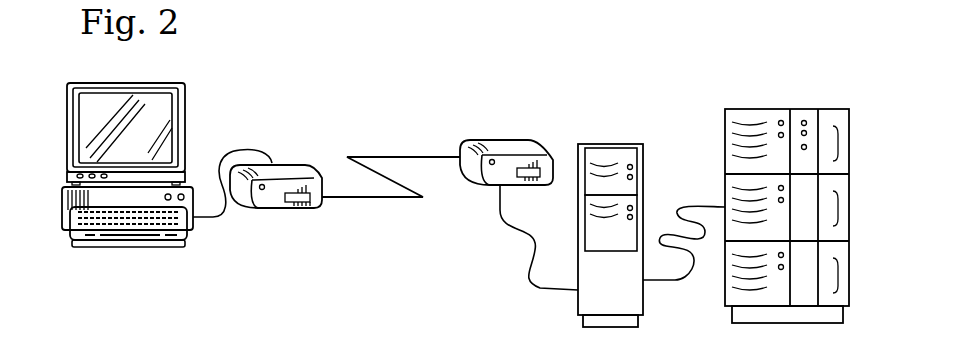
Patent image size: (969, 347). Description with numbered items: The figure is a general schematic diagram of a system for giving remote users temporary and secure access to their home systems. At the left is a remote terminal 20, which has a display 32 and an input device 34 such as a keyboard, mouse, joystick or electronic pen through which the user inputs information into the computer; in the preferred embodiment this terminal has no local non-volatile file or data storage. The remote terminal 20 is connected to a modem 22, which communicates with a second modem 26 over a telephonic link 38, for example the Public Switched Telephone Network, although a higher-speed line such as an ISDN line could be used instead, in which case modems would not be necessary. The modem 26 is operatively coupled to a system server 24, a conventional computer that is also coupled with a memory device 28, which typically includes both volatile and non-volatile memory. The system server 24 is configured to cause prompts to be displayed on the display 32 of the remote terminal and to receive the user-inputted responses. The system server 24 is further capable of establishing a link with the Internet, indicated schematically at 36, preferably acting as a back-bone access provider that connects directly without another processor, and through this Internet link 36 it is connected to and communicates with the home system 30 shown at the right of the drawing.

The remote terminal 20 is at (185, 113).
The modem 22 is at (273, 165).
The system server 24 is at (585, 143).
The modem 26 is at (478, 140).
The memory device 28 is at (578, 296).
The home system 30 is at (797, 108).
The display 32 is at (82, 112).
The input device 34 is at (100, 248).
The Internet link 36 is at (690, 207).
The telephonic link 38 is at (353, 153).